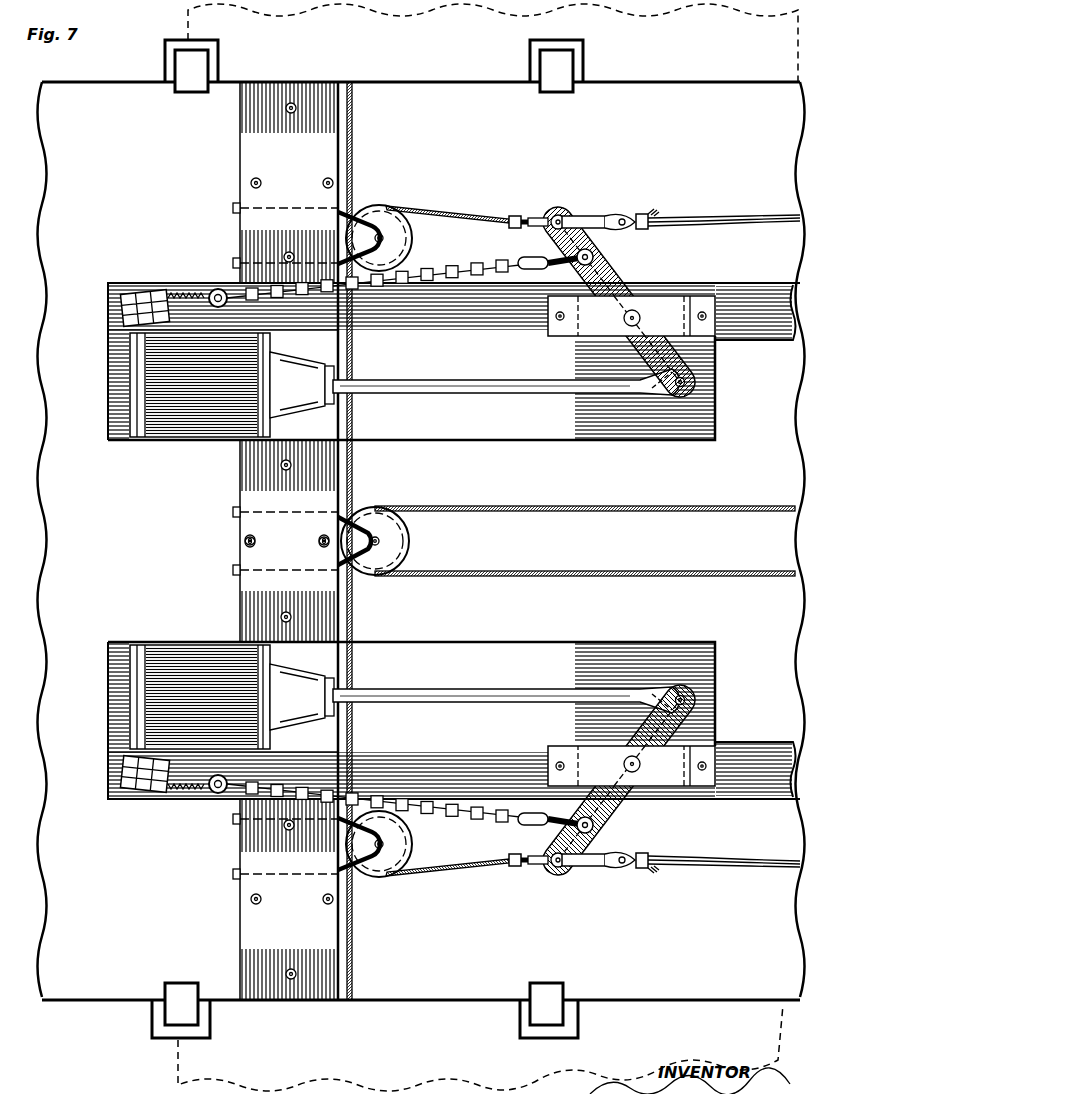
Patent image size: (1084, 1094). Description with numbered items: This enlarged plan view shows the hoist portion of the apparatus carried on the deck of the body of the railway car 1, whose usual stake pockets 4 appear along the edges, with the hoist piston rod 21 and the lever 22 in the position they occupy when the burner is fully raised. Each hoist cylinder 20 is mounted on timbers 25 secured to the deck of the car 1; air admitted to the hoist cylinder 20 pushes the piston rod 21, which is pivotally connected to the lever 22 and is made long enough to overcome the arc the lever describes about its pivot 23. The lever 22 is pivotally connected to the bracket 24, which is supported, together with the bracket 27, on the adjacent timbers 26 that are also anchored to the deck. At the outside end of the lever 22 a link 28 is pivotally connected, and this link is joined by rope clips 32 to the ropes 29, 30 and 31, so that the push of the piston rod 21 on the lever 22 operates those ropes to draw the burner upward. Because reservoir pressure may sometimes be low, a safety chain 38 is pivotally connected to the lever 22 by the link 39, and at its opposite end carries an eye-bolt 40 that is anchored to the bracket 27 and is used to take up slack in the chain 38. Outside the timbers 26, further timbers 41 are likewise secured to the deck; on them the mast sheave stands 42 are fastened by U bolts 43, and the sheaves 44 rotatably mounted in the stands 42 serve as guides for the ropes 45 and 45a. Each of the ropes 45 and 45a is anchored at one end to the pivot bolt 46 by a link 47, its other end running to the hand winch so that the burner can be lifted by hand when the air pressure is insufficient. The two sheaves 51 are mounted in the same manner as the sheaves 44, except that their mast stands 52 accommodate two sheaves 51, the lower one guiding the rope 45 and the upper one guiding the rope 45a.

The body of railway car 1 is at (421, 541).
The stake pockets 4 is at (214, 55).
The hoist cylinder 20 is at (232, 541).
The piston rod 21 is at (492, 390).
The lever 22 is at (610, 265).
The pivot 23 is at (638, 310).
The bracket 24 is at (702, 300).
The timbers 25 is at (686, 440).
The timbers 26 is at (758, 336).
The bracket 27 is at (134, 292).
The link 28 is at (594, 216).
The rope 29 is at (678, 220).
The rope 30 is at (718, 204).
The rope 31 is at (753, 219).
The rope clips 32 is at (643, 216).
The chain 38 is at (453, 270).
The link 39 is at (547, 257).
The eye-bolt 40 is at (215, 288).
The timbers 41 is at (289, 541).
The mast sheave stands 42 is at (353, 212).
The U bolts 43 is at (238, 210).
The sheaves 44 is at (383, 212).
The rope 45 is at (572, 508).
The rope 45a is at (428, 213).
The pivot bolt 46 is at (562, 216).
The link 47 is at (541, 217).
The sheaves 51 is at (409, 542).
The mast stands 52 is at (365, 532).